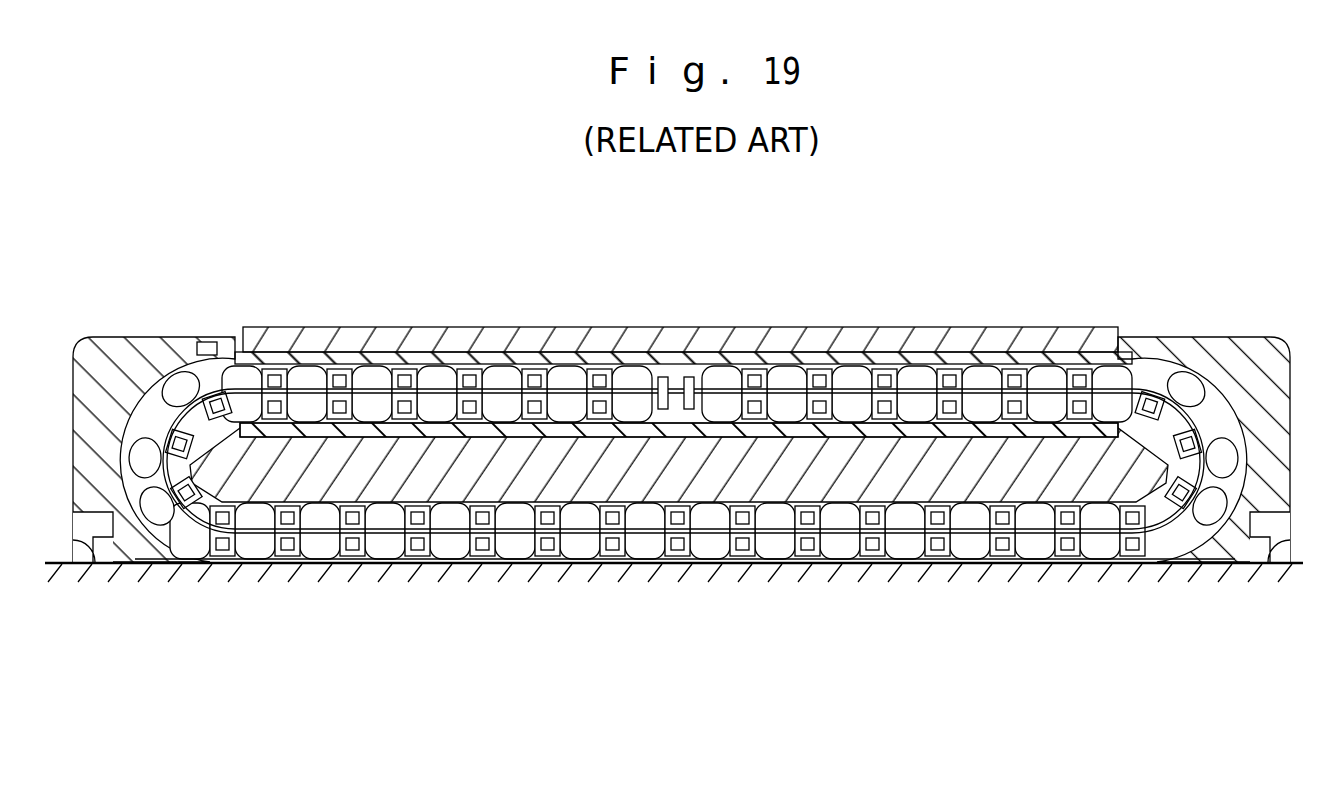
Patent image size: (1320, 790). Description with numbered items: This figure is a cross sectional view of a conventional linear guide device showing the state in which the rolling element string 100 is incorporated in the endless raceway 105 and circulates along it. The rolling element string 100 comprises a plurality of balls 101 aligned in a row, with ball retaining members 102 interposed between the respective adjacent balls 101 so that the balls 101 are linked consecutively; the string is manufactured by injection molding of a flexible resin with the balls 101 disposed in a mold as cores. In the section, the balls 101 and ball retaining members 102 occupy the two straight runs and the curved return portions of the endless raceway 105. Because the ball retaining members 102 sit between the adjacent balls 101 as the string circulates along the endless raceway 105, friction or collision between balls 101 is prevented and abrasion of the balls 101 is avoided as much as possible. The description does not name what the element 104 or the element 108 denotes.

The rolling element string 100 is at (1170, 337).
The balls 101 is at (990, 375).
The ball retaining members 102 is at (590, 380).
The top plate / raceway member 104 is at (836, 327).
The endless raceway 105 is at (402, 362).
The base / bed 108 is at (1085, 572).